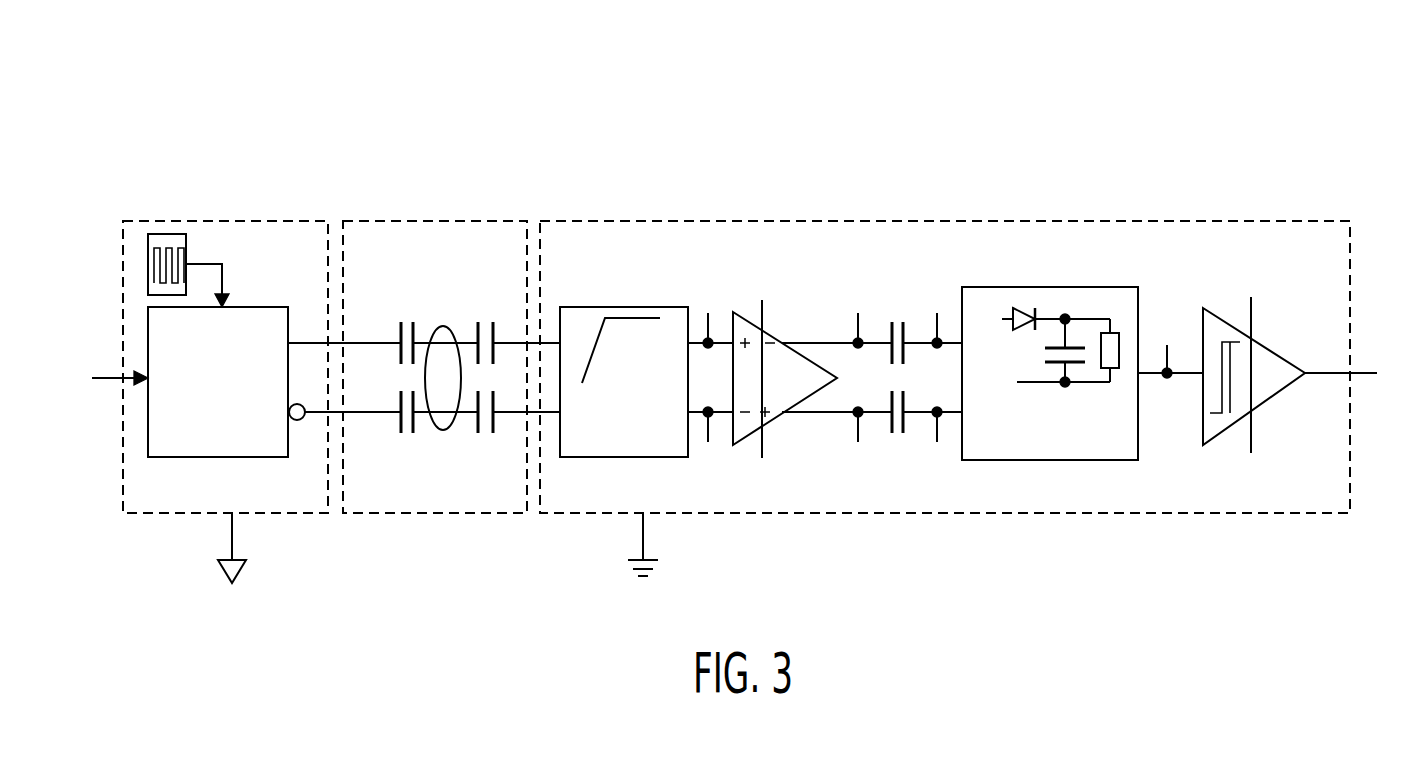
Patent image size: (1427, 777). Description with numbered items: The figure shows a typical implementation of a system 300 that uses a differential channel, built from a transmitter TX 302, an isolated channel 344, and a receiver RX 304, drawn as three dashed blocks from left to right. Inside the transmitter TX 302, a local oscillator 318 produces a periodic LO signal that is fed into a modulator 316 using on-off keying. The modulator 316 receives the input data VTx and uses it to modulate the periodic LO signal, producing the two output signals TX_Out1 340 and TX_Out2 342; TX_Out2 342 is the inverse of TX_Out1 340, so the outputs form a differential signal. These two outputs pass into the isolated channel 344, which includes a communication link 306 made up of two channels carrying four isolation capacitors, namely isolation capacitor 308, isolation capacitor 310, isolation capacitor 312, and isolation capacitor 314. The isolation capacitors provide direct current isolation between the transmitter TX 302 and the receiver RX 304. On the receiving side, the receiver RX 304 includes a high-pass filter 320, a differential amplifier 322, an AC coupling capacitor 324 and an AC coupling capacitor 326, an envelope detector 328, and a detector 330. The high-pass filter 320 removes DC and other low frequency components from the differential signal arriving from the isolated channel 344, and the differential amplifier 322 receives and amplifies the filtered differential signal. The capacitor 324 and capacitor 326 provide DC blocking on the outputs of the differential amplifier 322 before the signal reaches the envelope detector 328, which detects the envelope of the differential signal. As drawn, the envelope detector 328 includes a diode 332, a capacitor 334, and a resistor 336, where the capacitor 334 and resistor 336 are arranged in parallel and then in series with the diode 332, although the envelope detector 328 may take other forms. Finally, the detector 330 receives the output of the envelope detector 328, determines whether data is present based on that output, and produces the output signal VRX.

The system 300 is at (1351, 135).
The transmitter TX 302 is at (233, 221).
The receiver RX 304 is at (952, 221).
The communication link 306 is at (443, 328).
The isolation capacitor 308 is at (400, 332).
The isolation capacitor 310 is at (402, 428).
The isolation capacitor 312 is at (493, 332).
The isolation capacitor 314 is at (478, 428).
The modulator 316 is at (148, 425).
The local oscillator 318 is at (163, 234).
The high-pass filter 320 is at (590, 307).
The differential amplifier 322 is at (735, 315).
The AC coupling capacitor 324 is at (905, 322).
The AC coupling capacitor 326 is at (906, 428).
The envelope detector 328 is at (1089, 367).
The detector 330 is at (1267, 352).
The diode 332 is at (1020, 310).
The capacitor 334 is at (1045, 363).
The resistor 336 is at (1120, 345).
The TX_Out1 340 is at (305, 343).
The TX_Out2 342 is at (297, 421).
The isolated channel 344 is at (388, 221).